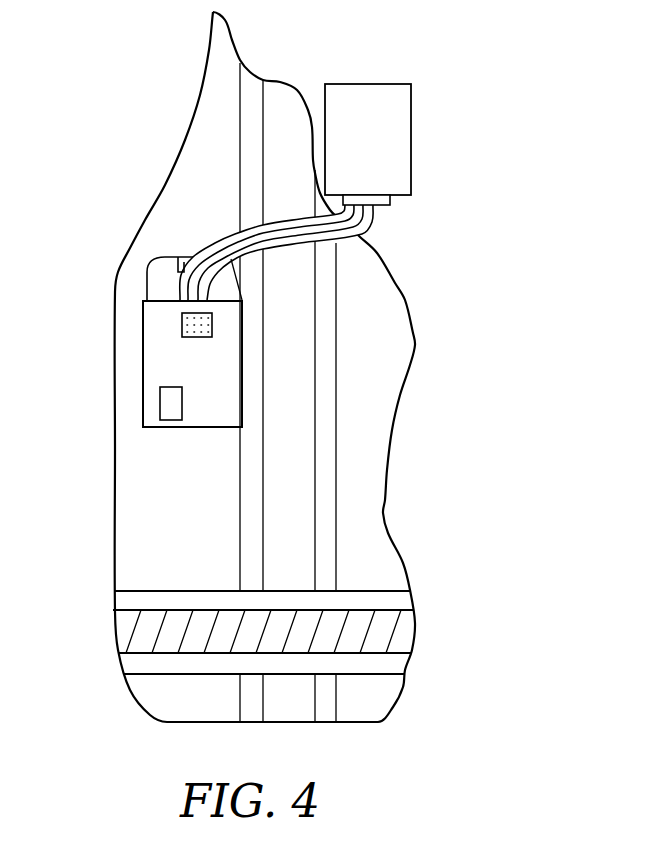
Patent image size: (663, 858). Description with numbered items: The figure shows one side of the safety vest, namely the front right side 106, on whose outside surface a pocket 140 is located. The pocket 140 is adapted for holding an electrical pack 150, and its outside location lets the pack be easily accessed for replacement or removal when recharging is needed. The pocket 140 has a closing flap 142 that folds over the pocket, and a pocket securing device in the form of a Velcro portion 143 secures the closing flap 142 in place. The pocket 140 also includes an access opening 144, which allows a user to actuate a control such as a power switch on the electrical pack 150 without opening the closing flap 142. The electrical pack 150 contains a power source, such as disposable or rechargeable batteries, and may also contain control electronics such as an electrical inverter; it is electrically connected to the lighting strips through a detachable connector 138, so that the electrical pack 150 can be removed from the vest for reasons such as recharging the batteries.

The front right side 106 is at (482, 331).
The detachable connector 138 is at (385, 202).
The pocket 140 is at (234, 350).
The closing flap 142 is at (157, 283).
The Velcro portion 143 is at (190, 327).
The access opening 144 is at (168, 408).
The electrical pack 150 is at (400, 131).